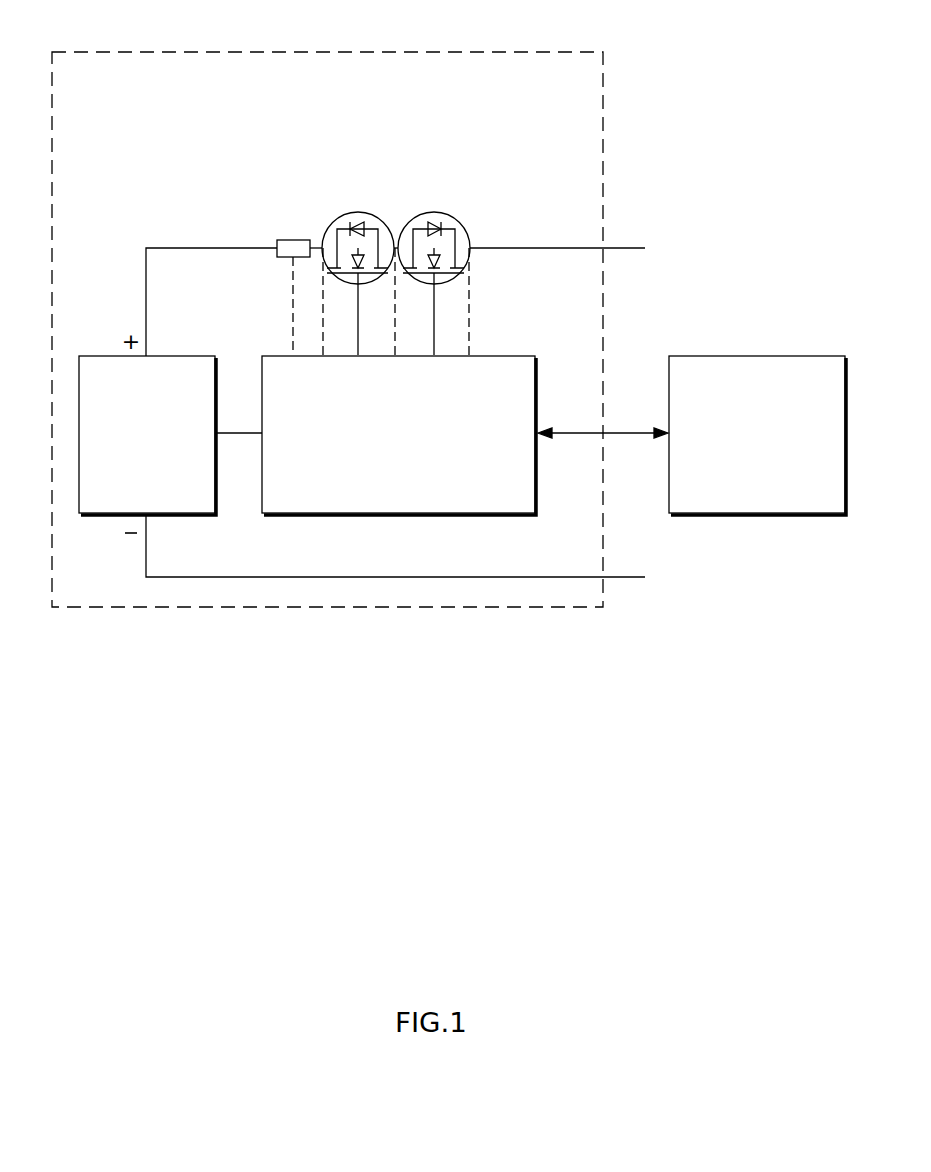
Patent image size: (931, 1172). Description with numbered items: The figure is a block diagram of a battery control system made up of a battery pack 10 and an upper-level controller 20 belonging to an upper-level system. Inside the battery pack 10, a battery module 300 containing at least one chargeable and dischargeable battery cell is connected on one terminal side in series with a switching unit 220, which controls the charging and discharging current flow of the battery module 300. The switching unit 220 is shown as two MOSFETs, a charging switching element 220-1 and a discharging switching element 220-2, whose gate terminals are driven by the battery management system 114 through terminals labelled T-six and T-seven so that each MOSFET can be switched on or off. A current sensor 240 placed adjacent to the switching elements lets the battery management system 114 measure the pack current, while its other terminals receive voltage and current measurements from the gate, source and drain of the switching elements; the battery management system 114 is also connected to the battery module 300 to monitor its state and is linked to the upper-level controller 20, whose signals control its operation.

The battery pack 10 is at (562, 52).
The upper-level controller 20 is at (826, 355).
The battery management system (BMS) 114 is at (526, 355).
The switching unit 220 is at (445, 141).
The charging switching element 220-1 is at (355, 212).
The discharging switching element 220-2 is at (431, 212).
The current sensor 240 is at (293, 240).
The battery module 300 is at (188, 355).